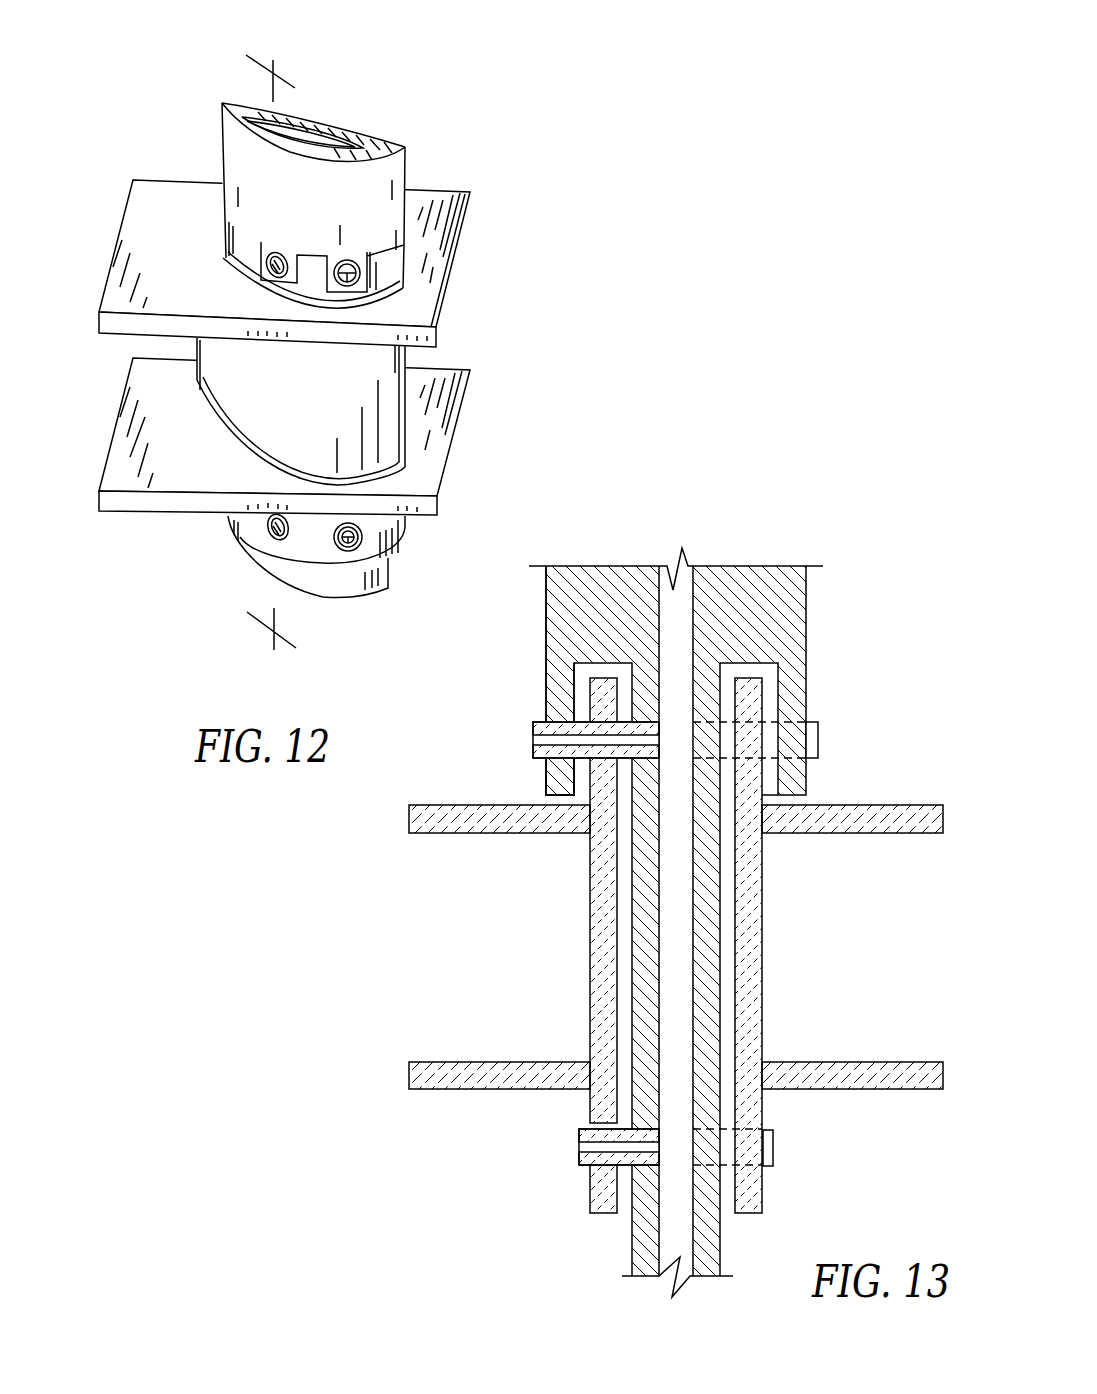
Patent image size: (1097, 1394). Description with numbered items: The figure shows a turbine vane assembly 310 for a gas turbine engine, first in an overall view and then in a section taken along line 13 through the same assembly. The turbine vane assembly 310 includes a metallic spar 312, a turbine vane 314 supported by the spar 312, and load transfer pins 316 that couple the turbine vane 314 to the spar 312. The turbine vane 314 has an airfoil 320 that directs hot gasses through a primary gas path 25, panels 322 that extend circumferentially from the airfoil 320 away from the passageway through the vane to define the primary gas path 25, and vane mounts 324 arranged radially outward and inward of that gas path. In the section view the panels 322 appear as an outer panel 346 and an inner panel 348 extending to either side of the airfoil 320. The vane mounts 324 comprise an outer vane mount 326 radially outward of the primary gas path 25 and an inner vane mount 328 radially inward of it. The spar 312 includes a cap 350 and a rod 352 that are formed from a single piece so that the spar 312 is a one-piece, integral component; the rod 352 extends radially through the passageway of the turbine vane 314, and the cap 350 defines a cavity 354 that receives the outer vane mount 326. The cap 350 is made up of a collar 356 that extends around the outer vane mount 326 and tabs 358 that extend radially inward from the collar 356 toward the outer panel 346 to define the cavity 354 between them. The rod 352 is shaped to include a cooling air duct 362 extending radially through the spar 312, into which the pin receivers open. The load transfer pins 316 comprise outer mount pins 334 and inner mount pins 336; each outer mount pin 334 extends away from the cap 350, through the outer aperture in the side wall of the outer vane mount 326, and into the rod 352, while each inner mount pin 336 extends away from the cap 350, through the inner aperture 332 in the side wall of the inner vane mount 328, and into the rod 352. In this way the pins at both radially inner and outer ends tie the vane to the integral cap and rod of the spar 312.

In FIG. 12, the turbine vane assembly 310 is at (525, 105).
In FIG. 13, the turbine vane assembly 310 is at (850, 560).
In FIG. 12, the spar 312 is at (186, 157).
In FIG. 13, the spar 312 is at (833, 641).
In FIG. 12, the section line 13- 13 is at (244, 54).
In FIG. 12, the turbine vane 314 is at (530, 340).
In FIG. 13, the turbine vane 314 is at (397, 1006).
In FIG. 12, the load transfer pins 316 is at (212, 525).
In FIG. 13, the load transfer pins 316 is at (830, 695).
In FIG. 13, the airfoil 320 is at (770, 945).
In FIG. 12, the panels 322 is at (470, 402).
In FIG. 12, the vane mounts 324 is at (173, 522).
In FIG. 13, the outer vane mount 326 is at (770, 683).
In FIG. 13, the inner vane mount 328 is at (588, 1193).
In FIG. 12, the inner aperture 332 is at (347, 565).
In FIG. 12, the outer mount pins 334 is at (277, 263).
In FIG. 13, the outer mount pins 334 is at (533, 729).
In FIG. 12, the inner mount pins 336 is at (277, 538).
In FIG. 13, the inner mount pins 336 is at (579, 1137).
In FIG. 13, the outer panel 346 is at (878, 805).
In FIG. 13, the lower plate 348 is at (878, 1062).
In FIG. 13, the cap 350 is at (526, 652).
In FIG. 13, the rod 352 is at (630, 862).
In FIG. 13, the cavity 354 is at (603, 672).
In FIG. 13, the collar 356 is at (546, 620).
In FIG. 13, the tabs 358 is at (546, 789).
In FIG. 13, the cooling air duct 362 is at (677, 627).
In FIG. 12, the primary gas path 25 is at (99, 394).
In FIG. 13, the primary gas path 25 is at (503, 951).